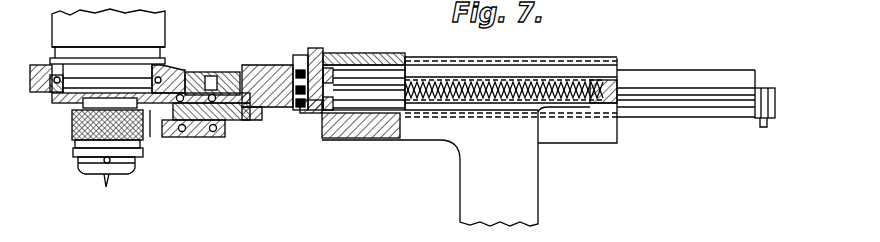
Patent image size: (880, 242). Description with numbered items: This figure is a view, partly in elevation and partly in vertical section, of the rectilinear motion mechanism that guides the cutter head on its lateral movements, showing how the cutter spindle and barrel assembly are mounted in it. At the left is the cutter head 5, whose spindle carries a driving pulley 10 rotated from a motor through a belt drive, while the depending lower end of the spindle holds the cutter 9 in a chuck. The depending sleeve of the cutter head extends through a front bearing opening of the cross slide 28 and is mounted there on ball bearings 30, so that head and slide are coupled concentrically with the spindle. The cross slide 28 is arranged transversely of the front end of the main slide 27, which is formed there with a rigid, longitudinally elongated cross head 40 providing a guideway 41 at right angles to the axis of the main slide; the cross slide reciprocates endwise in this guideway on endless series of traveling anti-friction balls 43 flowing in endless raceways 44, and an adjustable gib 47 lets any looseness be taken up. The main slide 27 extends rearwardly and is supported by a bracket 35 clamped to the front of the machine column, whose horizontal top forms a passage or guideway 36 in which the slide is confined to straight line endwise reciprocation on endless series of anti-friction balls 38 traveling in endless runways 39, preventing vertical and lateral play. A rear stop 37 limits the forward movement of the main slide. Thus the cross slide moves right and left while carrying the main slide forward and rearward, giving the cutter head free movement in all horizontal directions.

The cutter head 5 is at (160, 42).
The cutter 9 is at (104, 178).
The driving pulley 10 is at (80, 158).
The main slide 27 is at (270, 80).
The cross slide 28 is at (45, 93).
The ball bearings 30 is at (176, 78).
The bracket 35 is at (528, 191).
The passage or guideway 36 is at (347, 113).
The rear stop 37 is at (764, 124).
The anti-friction balls 38 is at (560, 90).
The endless runways 39 is at (392, 78).
The cross head 40 is at (250, 118).
The guideway 41 is at (240, 122).
The anti-friction balls 43 is at (215, 96).
The endless raceways 44 is at (178, 131).
The adjustable gib 47 is at (152, 120).